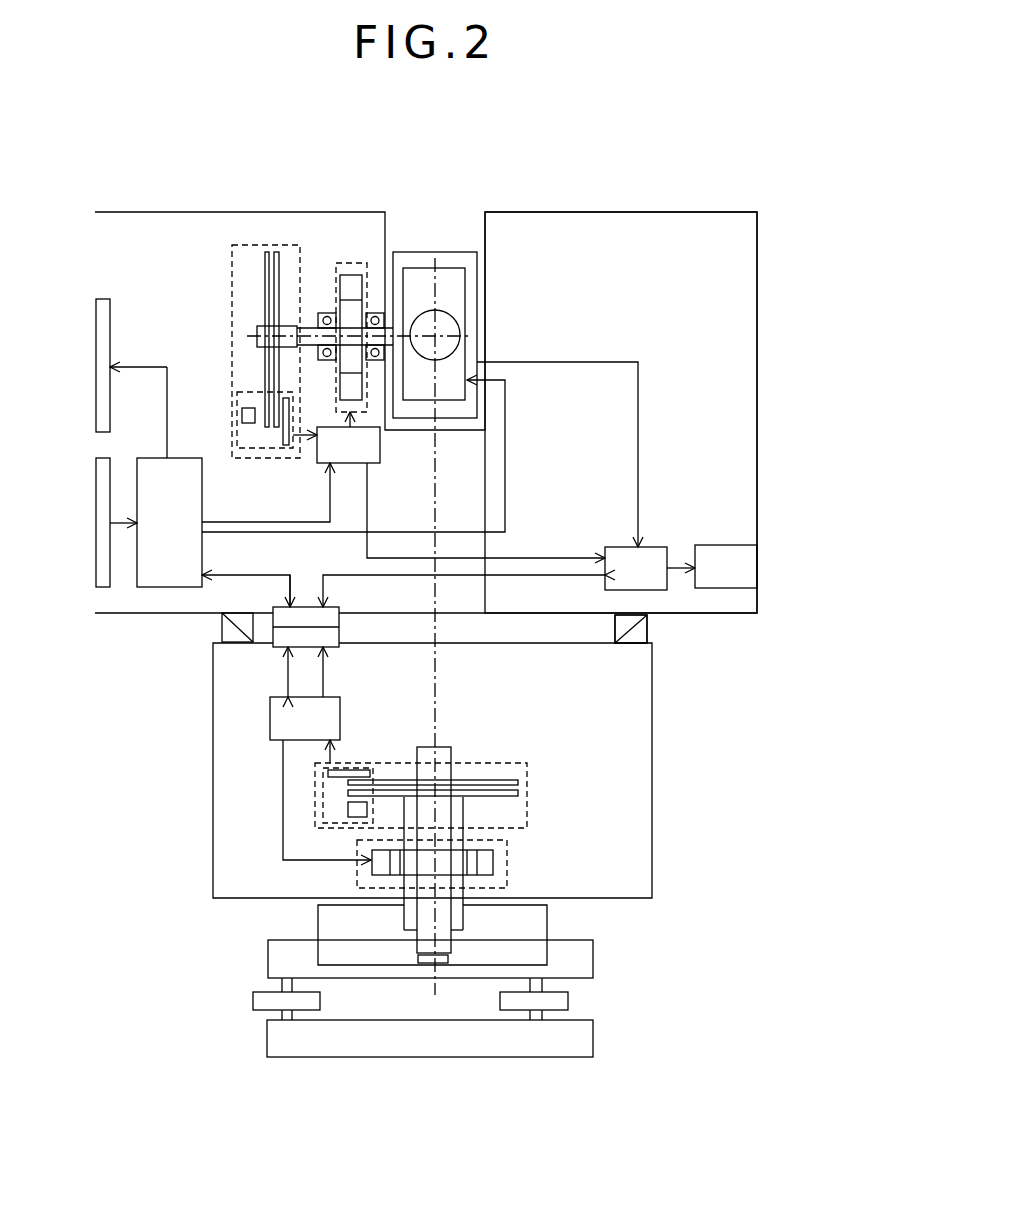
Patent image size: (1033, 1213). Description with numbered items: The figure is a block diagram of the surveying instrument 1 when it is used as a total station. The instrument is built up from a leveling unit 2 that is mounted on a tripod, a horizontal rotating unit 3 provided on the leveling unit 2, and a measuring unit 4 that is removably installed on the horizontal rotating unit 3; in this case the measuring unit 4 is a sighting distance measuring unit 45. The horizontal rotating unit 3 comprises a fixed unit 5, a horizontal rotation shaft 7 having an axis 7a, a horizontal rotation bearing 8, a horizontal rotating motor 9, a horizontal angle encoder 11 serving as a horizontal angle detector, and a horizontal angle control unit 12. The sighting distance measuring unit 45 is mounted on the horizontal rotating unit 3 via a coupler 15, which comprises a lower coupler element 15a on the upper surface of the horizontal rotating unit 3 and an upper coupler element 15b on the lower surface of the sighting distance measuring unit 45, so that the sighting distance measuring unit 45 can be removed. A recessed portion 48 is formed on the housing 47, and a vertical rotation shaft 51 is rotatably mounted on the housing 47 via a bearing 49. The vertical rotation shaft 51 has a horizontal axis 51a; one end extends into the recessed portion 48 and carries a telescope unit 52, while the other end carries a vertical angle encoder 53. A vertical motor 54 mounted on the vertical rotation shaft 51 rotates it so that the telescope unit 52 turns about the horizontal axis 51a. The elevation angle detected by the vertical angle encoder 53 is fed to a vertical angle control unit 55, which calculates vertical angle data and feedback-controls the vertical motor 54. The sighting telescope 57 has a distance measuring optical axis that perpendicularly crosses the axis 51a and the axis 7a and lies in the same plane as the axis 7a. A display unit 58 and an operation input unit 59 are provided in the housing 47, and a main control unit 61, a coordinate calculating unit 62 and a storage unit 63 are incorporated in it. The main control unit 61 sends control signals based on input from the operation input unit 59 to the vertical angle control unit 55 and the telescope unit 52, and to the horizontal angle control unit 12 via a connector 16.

The surveying instrument 1 is at (317, 159).
The leveling unit 2 is at (593, 958).
The horizontal rotating unit 3 is at (655, 790).
The measuring unit 4 is at (590, 212).
The sighting distance measuring unit 45 is at (426, 412).
The fixed unit 5 is at (547, 920).
The horizontal rotation shaft 7 is at (453, 773).
The axis 7a is at (437, 808).
The horizontal rotation bearing 8 is at (463, 923).
The horizontal rotating motor 9 is at (510, 860).
The horizontal angle encoder 11 is at (527, 792).
The horizontal angle control unit 12 is at (267, 723).
The coupler 15 is at (222, 628).
The lower coupler element 15a is at (648, 627).
The upper coupler element 15b is at (615, 620).
The connector 16 is at (338, 607).
The housing 47 is at (693, 212).
The recessed portion 48 is at (460, 227).
The bearing 49 is at (321, 312).
The vertical rotation shaft 51 is at (290, 320).
The horizontal axis 51a is at (255, 333).
The telescope unit 52 is at (432, 250).
The vertical angle encoder 53 is at (258, 243).
The vertical motor 54 is at (355, 262).
The vertical angle control unit 55 is at (380, 440).
The sighting telescope 57 is at (457, 313).
The display unit 58 is at (95, 358).
The operation input unit 59 is at (95, 542).
The main control unit 61 is at (168, 458).
The coordinate calculating unit 62 is at (607, 547).
The storage unit 63 is at (740, 545).